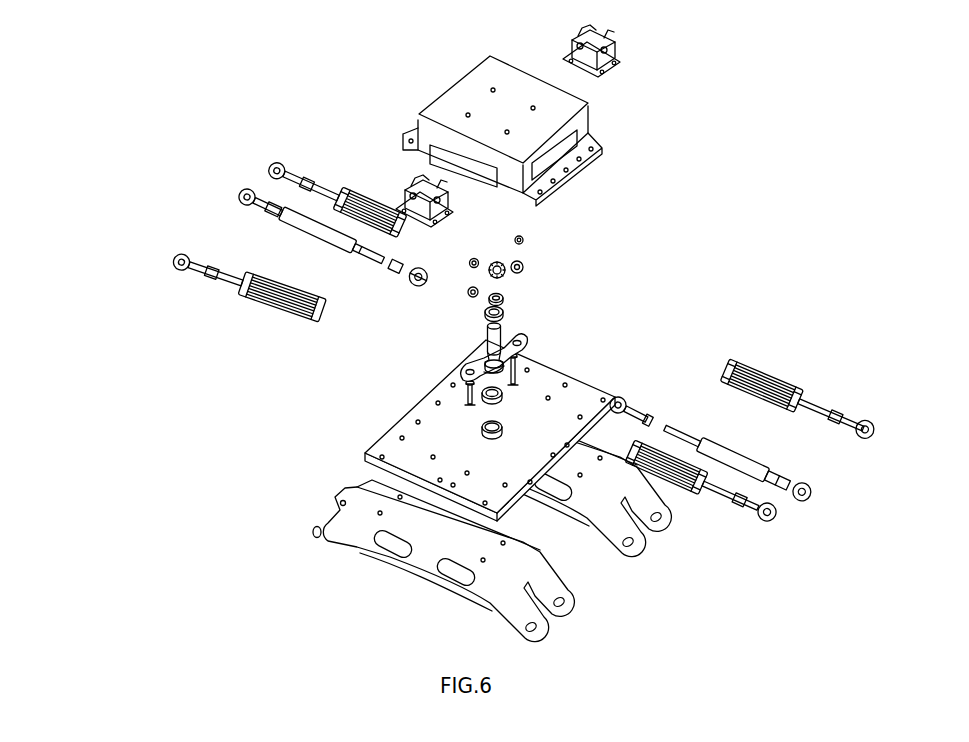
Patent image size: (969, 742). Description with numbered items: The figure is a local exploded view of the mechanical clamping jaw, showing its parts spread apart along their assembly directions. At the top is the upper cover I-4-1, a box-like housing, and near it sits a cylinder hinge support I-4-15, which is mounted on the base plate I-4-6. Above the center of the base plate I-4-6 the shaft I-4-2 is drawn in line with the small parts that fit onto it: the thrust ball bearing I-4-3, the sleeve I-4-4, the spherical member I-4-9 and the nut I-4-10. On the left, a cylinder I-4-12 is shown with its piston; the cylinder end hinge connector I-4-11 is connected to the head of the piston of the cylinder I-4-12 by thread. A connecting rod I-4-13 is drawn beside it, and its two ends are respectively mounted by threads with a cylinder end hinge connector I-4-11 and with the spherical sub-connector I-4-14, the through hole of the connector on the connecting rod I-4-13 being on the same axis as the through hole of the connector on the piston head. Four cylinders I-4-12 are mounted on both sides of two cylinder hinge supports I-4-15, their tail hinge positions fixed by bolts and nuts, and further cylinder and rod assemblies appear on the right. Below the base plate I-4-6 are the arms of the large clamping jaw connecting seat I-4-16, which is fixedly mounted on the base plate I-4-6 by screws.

The upper cover I-4-1 is at (400, 135).
The shaft I-4-2 is at (500, 332).
The thrust ball bearing I-4-3 is at (500, 297).
The sleeve I-4-4 is at (500, 311).
The base plate I-4-6 is at (350, 487).
The spherical member I-4-9 is at (519, 265).
The nut I-4-10 is at (522, 242).
The cylinder end hinge connector I-4-11 is at (337, 193).
The cylinder I-4-12 is at (335, 205).
The connecting rod I-4-13 is at (322, 237).
The spherical sub-connector I-4-14 is at (428, 282).
The cylinder hinge support I-4-15 is at (592, 58).
The large clamping jaw connecting seat I-4-16 is at (640, 535).